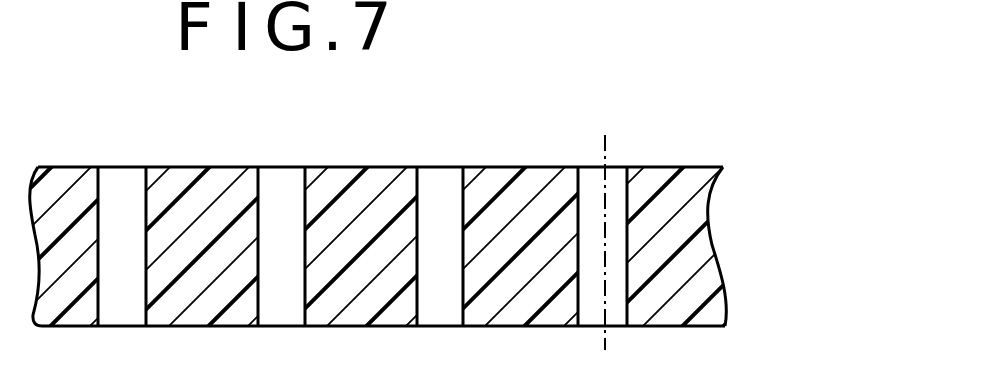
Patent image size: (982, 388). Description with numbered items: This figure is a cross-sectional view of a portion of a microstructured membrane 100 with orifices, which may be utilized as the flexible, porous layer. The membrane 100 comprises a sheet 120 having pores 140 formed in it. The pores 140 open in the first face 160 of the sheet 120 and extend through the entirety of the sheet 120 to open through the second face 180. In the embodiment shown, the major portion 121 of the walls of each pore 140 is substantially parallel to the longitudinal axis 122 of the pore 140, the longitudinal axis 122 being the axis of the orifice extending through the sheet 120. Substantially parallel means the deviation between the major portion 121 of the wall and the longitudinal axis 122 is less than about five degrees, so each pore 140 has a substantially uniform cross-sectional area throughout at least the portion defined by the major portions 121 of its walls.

The membrane 100 is at (752, 130).
The sheet 120 is at (178, 178).
The major portion of the pore walls 121 is at (580, 308).
The longitudinal axis 122 is at (605, 143).
The pores 140 is at (442, 188).
The first face 160 is at (347, 167).
The second face 180 is at (187, 328).